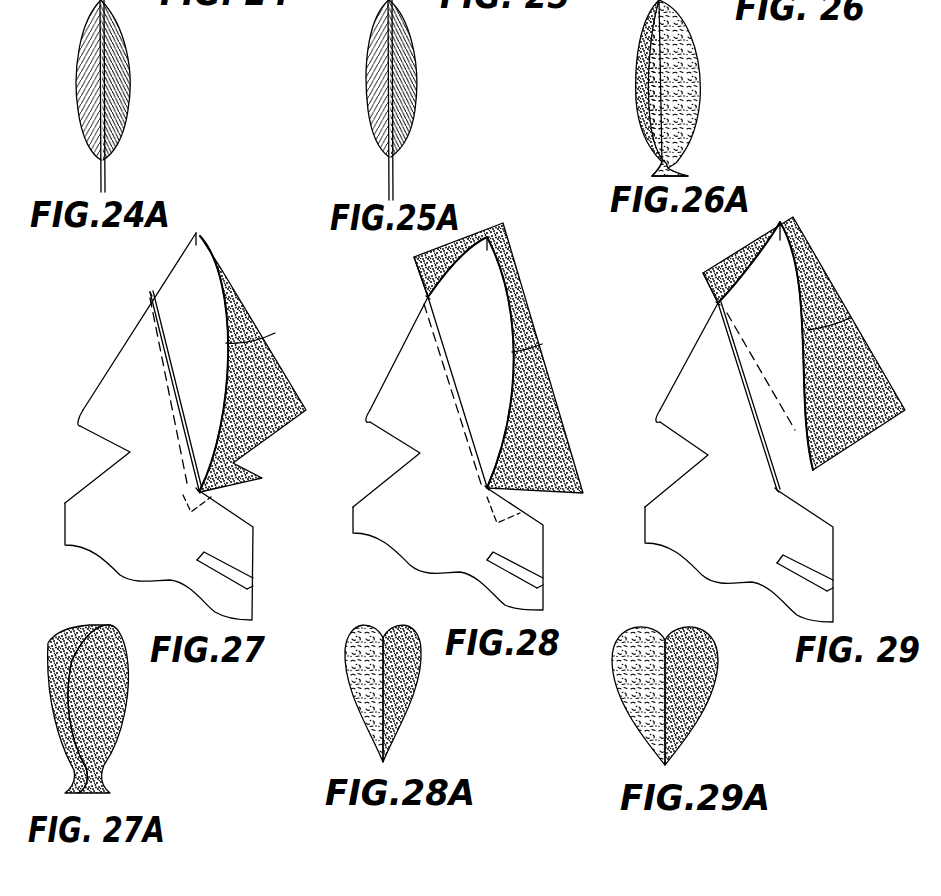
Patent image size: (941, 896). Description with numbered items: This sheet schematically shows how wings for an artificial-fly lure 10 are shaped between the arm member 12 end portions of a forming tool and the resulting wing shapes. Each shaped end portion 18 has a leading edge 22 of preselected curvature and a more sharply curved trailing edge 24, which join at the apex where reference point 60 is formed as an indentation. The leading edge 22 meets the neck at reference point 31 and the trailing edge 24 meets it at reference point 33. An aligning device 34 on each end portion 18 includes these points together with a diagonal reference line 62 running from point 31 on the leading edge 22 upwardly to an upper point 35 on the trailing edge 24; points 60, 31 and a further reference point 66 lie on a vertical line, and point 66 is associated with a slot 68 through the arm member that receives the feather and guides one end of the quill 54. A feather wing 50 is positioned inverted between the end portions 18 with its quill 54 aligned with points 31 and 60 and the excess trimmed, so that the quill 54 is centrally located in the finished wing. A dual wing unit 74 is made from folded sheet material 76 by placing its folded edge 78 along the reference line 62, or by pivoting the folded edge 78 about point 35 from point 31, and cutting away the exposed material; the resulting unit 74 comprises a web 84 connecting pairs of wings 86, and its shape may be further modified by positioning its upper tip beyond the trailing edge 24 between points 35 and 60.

In FIG. 27, the fishing lure 10 is at (168, 398).
In FIG. 28, the fishing lure 10 is at (457, 396).
In FIG. 29, the fishing lure 10 is at (745, 404).
In FIG. 27, the arm member 12 is at (80, 514).
In FIG. 28, the arm member 12 is at (372, 504).
In FIG. 29, the arm member 12 is at (660, 514).
In FIG. 27, the arm member second end portion 18 is at (115, 353).
In FIG. 28, the arm member second end portion 18 is at (393, 384).
In FIG. 29, the arm member second end portion 18 is at (683, 390).
In FIG. 27, the leading edge 22 is at (250, 345).
In FIG. 28, the leading edge 22 is at (542, 345).
In FIG. 29, the leading edge 22 is at (843, 323).
In FIG. 27, the trailing edge 24 is at (128, 318).
In FIG. 28, the trailing edge 24 is at (395, 357).
In FIG. 29, the trailing edge 24 is at (688, 358).
In FIG. 27, the reference point 31 is at (197, 490).
In FIG. 28, the reference point 31 is at (487, 489).
In FIG. 29, the reference point 31 is at (778, 491).
In FIG. 27, the reference point 33 is at (130, 452).
In FIG. 28, the reference point 33 is at (420, 453).
In FIG. 29, the reference point 33 is at (708, 455).
In FIG. 27, the aligning device 34 is at (148, 390).
In FIG. 28, the aligning device 34 is at (448, 408).
In FIG. 29, the aligning device 34 is at (738, 428).
In FIG. 27, the reference point 35 is at (147, 298).
In FIG. 28, the reference point 35 is at (426, 300).
In FIG. 29, the reference point 35 is at (717, 303).
In FIG. 24A, the feather wing 50 is at (80, 36).
In FIG. 25A, the feather wing 50 is at (370, 33).
In FIG. 24A, the feather quill 54 is at (100, 60).
In FIG. 25A, the feather quill 54 is at (390, 70).
In FIG. 27, the reference point 60 is at (196, 232).
In FIG. 28, the reference point 60 is at (487, 236).
In FIG. 29, the reference point 60 is at (779, 238).
In FIG. 27, the diagonal reference line 62 is at (168, 372).
In FIG. 28, the diagonal reference line 62 is at (450, 346).
In FIG. 29, the diagonal reference line 62 is at (732, 350).
In FIG. 27, the reference point 66 is at (200, 557).
In FIG. 28, the reference point 66 is at (487, 552).
In FIG. 29, the reference point 66 is at (775, 558).
In FIG. 27, the opening 68 is at (253, 580).
In FIG. 28, the opening 68 is at (543, 580).
In FIG. 29, the opening 68 is at (833, 582).
In FIG. 26A, the dual wing unit 74 is at (667, 88).
In FIG. 27, the dual wing unit 74 is at (259, 364).
In FIG. 27A, the dual wing unit 74 is at (95, 683).
In FIG. 28, the dual wing unit 74 is at (508, 348).
In FIG. 28A, the dual wing unit 74 is at (389, 667).
In FIG. 29, the dual wing unit 74 is at (804, 332).
In FIG. 29A, the dual wing unit 74 is at (678, 669).
In FIG. 27, the sheet material 76 is at (253, 364).
In FIG. 28, the sheet material 76 is at (515, 255).
In FIG. 29, the sheet material 76 is at (820, 260).
In FIG. 28, the folded edge 78 is at (425, 290).
In FIG. 29, the folded edge 78 is at (703, 273).
In FIG. 26A, the web 84 is at (680, 168).
In FIG. 26A, the wings 86 is at (640, 45).
In FIG. 27A, the wings 86 is at (128, 700).
In FIG. 28A, the wings 86 is at (345, 660).
In FIG. 29A, the wings 86 is at (613, 692).